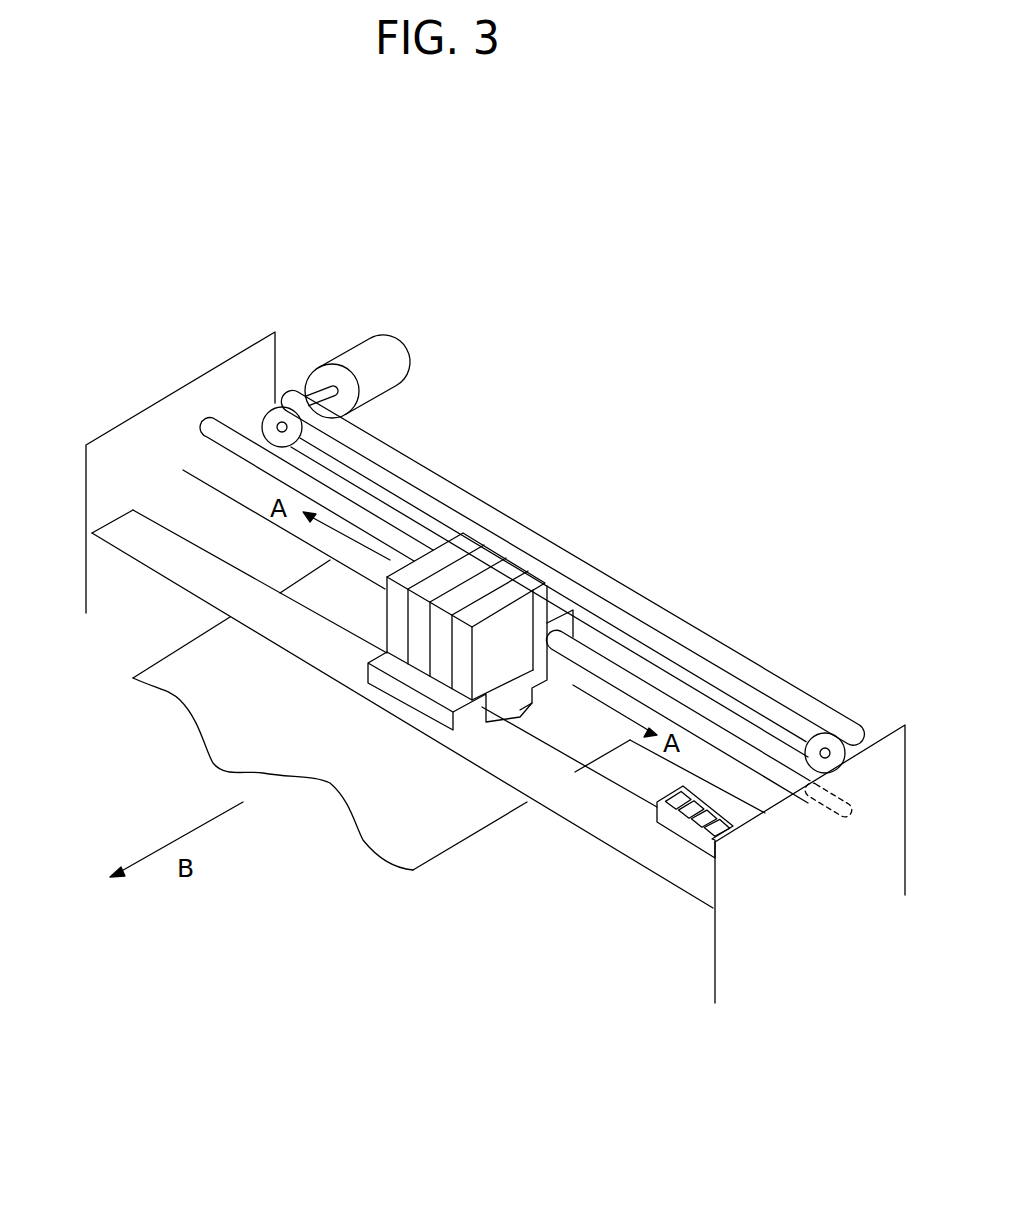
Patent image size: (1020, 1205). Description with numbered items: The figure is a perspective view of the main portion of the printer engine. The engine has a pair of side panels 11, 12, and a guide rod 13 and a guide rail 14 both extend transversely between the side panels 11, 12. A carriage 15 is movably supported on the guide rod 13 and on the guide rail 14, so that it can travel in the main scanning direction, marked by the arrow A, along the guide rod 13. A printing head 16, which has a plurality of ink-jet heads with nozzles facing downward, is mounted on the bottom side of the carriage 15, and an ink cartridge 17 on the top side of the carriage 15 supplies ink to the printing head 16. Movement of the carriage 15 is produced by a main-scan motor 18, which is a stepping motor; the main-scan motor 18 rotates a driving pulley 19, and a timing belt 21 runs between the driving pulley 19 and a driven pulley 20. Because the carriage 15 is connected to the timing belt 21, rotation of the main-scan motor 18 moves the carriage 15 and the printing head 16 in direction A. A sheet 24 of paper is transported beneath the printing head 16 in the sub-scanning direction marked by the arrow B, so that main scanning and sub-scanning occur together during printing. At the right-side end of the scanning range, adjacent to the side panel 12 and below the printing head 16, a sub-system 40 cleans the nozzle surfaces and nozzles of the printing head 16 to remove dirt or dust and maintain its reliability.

The side panel 11 is at (178, 388).
The side panel 12 is at (738, 965).
The guide rod 13 is at (660, 700).
The guide rail 14 is at (165, 570).
The carriage 15 is at (545, 608).
The printing head 16 is at (498, 706).
The ink cartridge 17 is at (460, 574).
The main-scan motor 18 is at (387, 362).
The driving pulley 19 is at (285, 412).
The driven pulley 20 is at (822, 738).
The timing belt 21 is at (453, 495).
The sheet 24 is at (393, 848).
The sub-system 40 is at (693, 838).